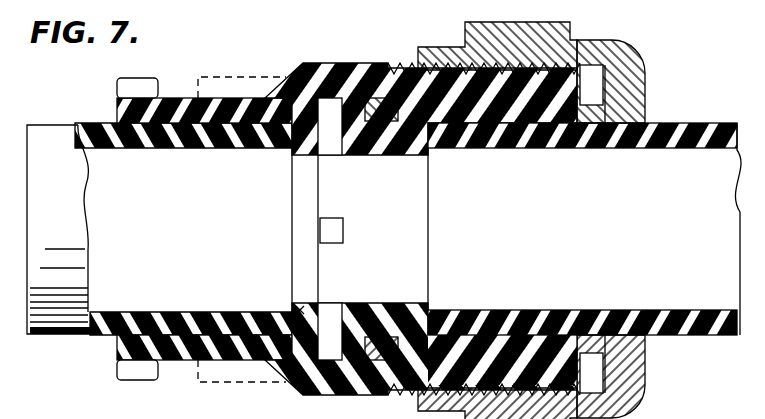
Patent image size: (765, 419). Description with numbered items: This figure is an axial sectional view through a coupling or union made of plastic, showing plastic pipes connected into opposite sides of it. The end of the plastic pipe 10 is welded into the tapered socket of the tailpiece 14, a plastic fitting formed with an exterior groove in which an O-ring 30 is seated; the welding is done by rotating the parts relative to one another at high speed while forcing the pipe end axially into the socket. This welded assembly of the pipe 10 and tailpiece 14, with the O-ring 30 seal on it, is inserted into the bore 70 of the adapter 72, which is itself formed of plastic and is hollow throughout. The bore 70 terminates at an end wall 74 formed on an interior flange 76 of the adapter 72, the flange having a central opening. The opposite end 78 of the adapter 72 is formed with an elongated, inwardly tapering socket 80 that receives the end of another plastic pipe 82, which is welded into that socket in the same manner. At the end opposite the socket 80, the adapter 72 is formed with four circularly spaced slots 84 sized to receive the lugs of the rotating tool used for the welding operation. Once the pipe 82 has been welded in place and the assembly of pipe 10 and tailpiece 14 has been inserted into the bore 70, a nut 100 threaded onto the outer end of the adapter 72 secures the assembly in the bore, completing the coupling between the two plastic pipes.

The plastic pipe 10 is at (643, 153).
The tailpiece 14 is at (478, 342).
The O-ring 30 is at (367, 156).
The bore 70 is at (393, 73).
The adapter 72 is at (421, 218).
The end wall 74 is at (305, 145).
The interior flange 76 is at (300, 310).
The opposite end 78 is at (176, 100).
The socket 80 is at (136, 120).
The plastic pipe 82 is at (181, 151).
The slots 84 is at (588, 84).
The nut 100 is at (573, 44).